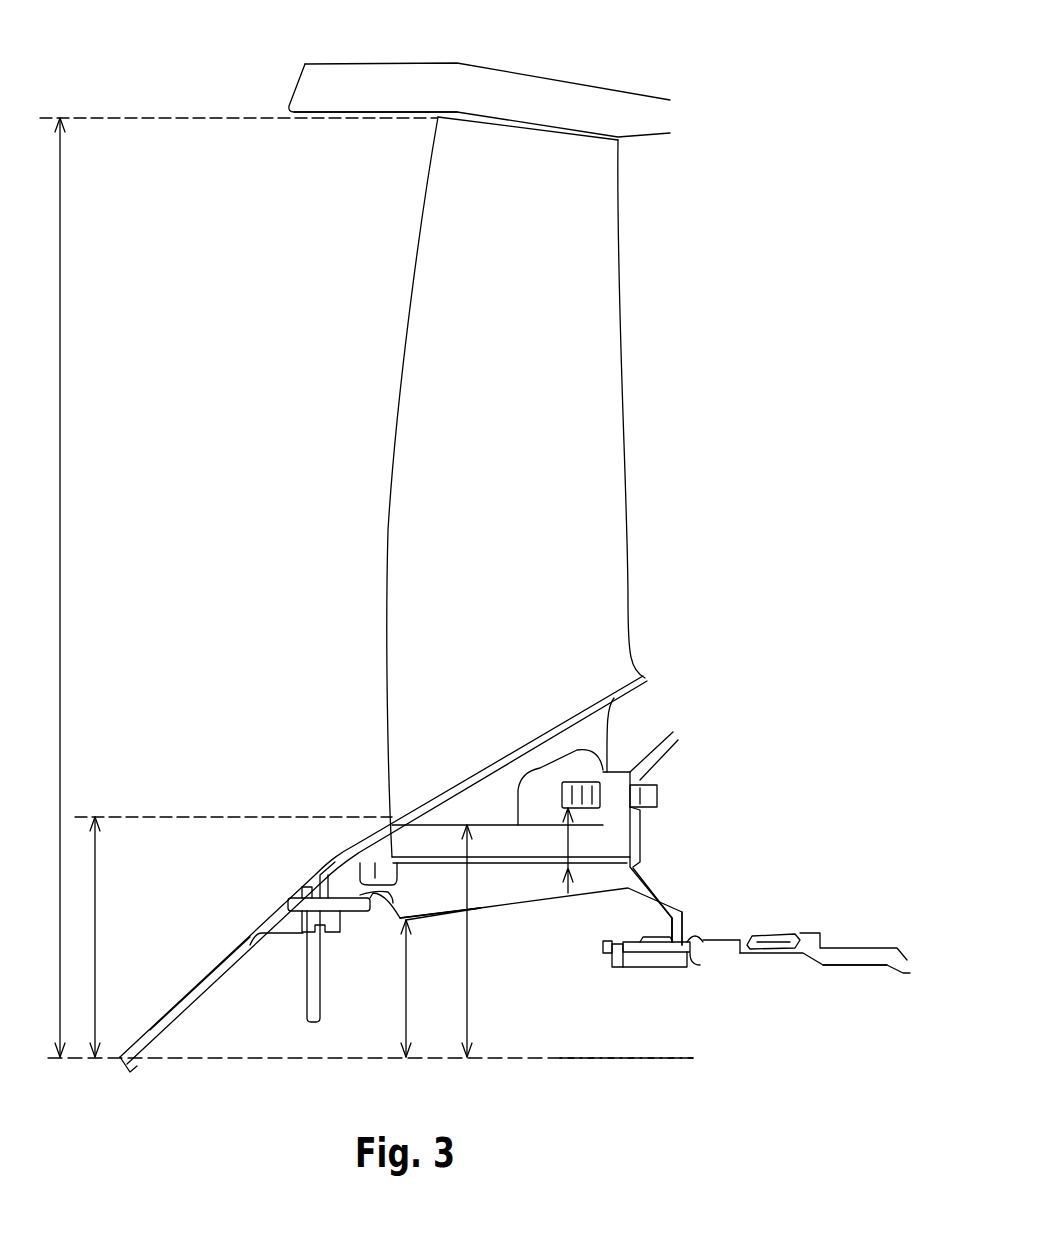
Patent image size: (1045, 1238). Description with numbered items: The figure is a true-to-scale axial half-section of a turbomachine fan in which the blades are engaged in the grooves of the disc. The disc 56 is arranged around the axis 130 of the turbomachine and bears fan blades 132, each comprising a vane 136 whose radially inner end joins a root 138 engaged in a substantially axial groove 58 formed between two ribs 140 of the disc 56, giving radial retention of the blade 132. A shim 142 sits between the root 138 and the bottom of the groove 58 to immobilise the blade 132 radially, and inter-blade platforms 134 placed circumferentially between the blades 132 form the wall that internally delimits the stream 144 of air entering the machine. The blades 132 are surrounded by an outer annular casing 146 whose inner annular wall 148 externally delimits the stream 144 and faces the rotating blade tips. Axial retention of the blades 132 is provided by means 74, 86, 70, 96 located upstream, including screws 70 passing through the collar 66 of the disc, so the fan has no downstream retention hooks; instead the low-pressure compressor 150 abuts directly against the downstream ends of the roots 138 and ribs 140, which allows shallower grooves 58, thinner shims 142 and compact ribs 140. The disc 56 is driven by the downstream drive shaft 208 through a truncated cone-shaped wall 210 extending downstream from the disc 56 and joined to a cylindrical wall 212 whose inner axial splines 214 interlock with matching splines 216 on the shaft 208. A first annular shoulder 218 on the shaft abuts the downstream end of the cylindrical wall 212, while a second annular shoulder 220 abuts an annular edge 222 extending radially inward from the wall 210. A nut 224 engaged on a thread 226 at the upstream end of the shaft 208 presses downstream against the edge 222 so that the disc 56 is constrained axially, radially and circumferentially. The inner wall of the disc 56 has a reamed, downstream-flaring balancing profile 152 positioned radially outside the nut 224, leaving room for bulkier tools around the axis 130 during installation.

The disc 56 is at (497, 882).
The grooves 58 is at (545, 864).
The collar 66 is at (335, 922).
The screws 70 is at (287, 903).
The means of axial retention 74 is at (352, 868).
The means of axial retention 86 is at (322, 875).
The means of axial retention 96 is at (227, 957).
The axis 130 is at (577, 1055).
The fan blade 132 is at (508, 487).
The inter-blade platforms 134 is at (577, 713).
The vane 136 is at (460, 395).
The root 138 is at (505, 838).
The ribs 140 is at (447, 820).
The shim 142 is at (592, 858).
The stream 144 is at (255, 550).
The outer annular casing 146 is at (360, 90).
The inner annular wall 148 is at (402, 120).
The low-pressure compressor 150 is at (670, 745).
The balancing profile 152 is at (450, 918).
The drive shaft 208 is at (848, 957).
The truncated cone-shaped wall 210 is at (665, 895).
The cylindrical wall 212 is at (737, 930).
The axial splines 214 is at (710, 950).
The splines 216 is at (738, 950).
The first annular shoulder 218 is at (813, 932).
The second annular shoulder 220 is at (685, 967).
The annular edge 222 is at (682, 905).
The nut 224 is at (681, 951).
The thread 226 is at (653, 955).